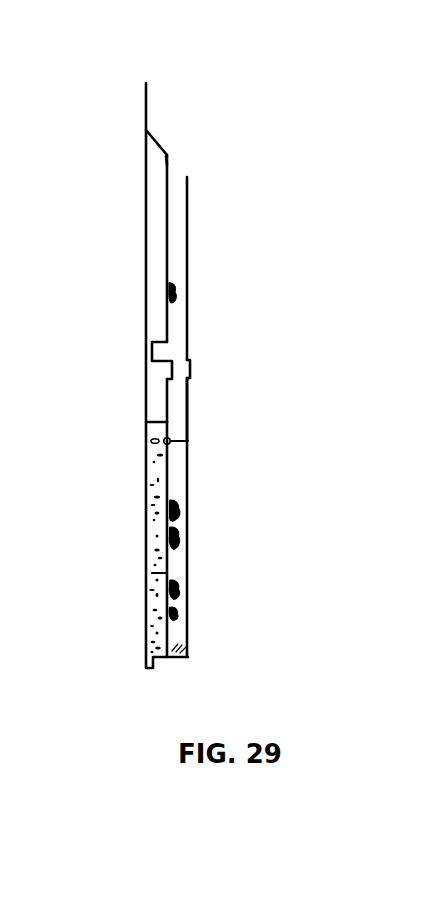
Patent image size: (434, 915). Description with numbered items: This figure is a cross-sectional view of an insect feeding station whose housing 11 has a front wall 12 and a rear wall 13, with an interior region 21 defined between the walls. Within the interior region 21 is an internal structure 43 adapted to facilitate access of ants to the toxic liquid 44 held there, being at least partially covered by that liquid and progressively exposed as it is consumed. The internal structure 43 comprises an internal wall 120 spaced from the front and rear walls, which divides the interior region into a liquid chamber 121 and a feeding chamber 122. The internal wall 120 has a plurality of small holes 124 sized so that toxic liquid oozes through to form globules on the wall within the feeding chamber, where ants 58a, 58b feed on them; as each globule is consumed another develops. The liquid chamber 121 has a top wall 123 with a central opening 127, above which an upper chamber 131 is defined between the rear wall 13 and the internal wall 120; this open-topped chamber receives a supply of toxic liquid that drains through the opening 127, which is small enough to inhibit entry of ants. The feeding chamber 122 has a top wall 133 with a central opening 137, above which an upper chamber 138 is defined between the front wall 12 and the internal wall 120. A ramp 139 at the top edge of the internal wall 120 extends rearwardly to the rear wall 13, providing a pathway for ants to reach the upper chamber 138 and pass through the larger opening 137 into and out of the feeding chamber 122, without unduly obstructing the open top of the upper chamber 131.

The housing 11 is at (138, 103).
The ramp 139 is at (168, 140).
The internal structure 43 is at (174, 162).
The upper chamber 131 is at (150, 178).
The rear wall 13 is at (148, 220).
The upper chamber 138 is at (172, 220).
The front wall 12 is at (188, 253).
The interior region 21 is at (180, 335).
The central opening 127 is at (152, 347).
The top wall 123 is at (151, 358).
The central opening 137 is at (184, 366).
The top wall 133 is at (185, 378).
The liquid chamber 121 is at (155, 413).
The internal wall 120 is at (170, 407).
The feeding chamber 122 is at (182, 433).
The small holes 124 is at (188, 442).
The toxic liquid 44 is at (152, 515).
The ants 58a is at (183, 538).
The ants 58b is at (190, 647).